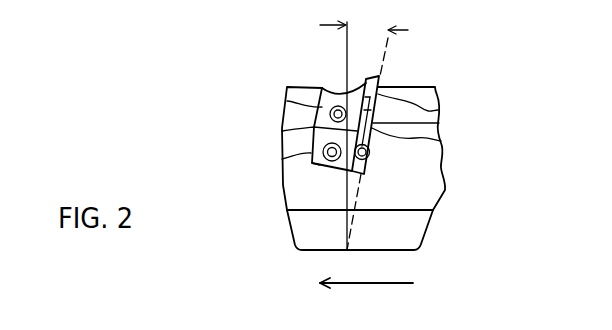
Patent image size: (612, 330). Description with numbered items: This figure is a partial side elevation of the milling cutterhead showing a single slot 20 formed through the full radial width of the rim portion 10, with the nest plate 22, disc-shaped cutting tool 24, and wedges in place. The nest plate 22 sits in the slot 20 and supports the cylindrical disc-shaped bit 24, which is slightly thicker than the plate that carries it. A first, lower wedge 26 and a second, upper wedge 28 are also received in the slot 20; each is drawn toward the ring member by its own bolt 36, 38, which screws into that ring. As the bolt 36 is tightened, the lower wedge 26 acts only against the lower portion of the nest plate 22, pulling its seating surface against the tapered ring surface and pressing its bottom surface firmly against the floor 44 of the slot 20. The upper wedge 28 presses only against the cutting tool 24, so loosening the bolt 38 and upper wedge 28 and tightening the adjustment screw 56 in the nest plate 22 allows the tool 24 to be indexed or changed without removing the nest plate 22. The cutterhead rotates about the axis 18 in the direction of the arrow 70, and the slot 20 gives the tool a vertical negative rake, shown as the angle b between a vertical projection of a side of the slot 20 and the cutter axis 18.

The rim portion 10 is at (421, 192).
The axis 18 is at (347, 56).
The angle b is at (377, 131).
The slot 20 is at (328, 172).
The nest plate 22 is at (441, 141).
The disc-shaped bit 24 is at (437, 111).
The first (lower) wedge 26 is at (282, 159).
The second (upper) wedge 28 is at (333, 91).
The bolt 36 is at (282, 131).
The bolt 38 is at (287, 101).
The floor of slot 44 is at (318, 163).
The adjustment screw 56 is at (371, 153).
The arrow 70 is at (370, 285).